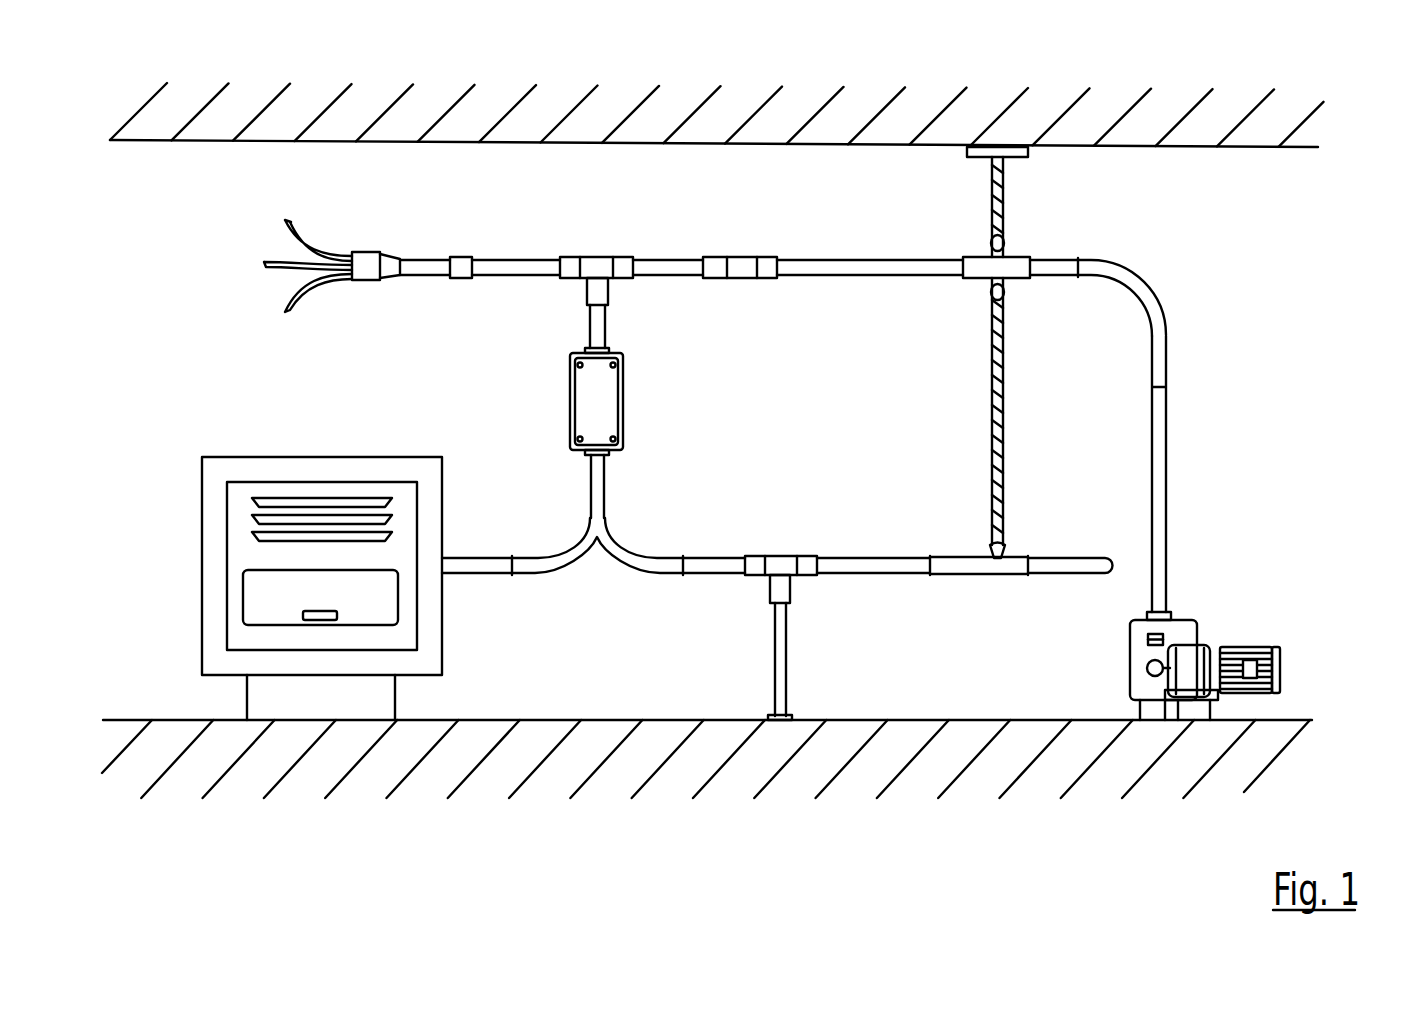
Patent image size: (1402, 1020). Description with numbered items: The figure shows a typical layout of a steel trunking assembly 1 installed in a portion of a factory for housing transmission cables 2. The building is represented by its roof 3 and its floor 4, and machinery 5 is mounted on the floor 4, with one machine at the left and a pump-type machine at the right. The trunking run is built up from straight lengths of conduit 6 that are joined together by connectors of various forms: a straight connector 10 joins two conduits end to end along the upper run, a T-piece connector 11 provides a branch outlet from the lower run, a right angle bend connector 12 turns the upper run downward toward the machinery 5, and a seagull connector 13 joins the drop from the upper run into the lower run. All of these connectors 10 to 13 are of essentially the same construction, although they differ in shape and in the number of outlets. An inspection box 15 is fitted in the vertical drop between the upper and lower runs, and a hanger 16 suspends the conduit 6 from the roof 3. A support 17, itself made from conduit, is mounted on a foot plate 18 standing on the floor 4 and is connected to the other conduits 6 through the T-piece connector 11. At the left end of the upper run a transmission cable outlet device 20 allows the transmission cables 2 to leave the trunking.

The steel trunking assembly 1 is at (849, 389).
The transmission cables 2 is at (282, 220).
The roof 3 is at (402, 142).
The floor 4 is at (585, 722).
The machinery 5 is at (212, 540).
The straight lengths of conduit 6 is at (658, 268).
The straight connector 10 is at (735, 268).
The T-piece connector 11 is at (777, 567).
The right angle bend connector 12 is at (1110, 270).
The seagull connector 13 is at (597, 487).
The inspection box 15 is at (598, 393).
The hangers 16 is at (1003, 170).
The support 17 is at (775, 660).
The foot plates 18 is at (773, 712).
The transmission cable outlet device 20 is at (365, 281).